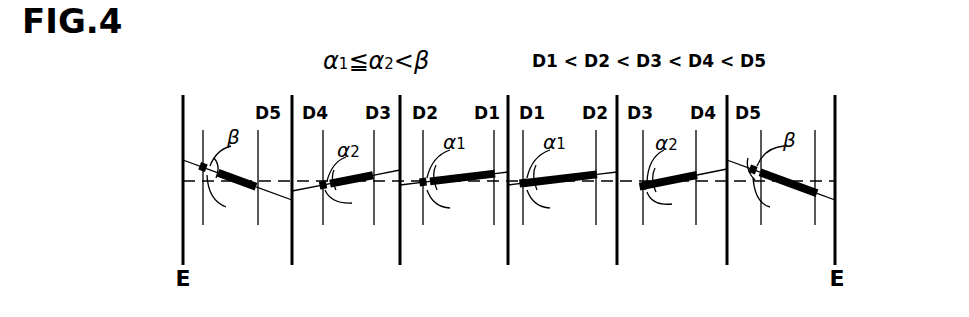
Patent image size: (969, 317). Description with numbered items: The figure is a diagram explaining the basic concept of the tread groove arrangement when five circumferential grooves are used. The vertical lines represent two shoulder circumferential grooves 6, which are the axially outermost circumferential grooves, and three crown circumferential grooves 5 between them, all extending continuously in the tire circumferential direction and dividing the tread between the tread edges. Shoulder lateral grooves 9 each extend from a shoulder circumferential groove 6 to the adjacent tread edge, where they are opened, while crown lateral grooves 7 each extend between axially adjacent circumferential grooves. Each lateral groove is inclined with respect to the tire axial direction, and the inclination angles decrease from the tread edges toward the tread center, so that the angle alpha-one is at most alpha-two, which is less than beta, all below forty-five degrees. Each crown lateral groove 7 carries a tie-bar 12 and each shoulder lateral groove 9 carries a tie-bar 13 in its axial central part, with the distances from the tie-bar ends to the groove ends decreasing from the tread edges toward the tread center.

The crown circumferential groove 5 is at (508, 193).
The shoulder circumferential groove 6 is at (509, 193).
The crown lateral groove 7 is at (509, 215).
The shoulder lateral groove 9 is at (545, 213).
The tie-bar 12 is at (513, 213).
The tie-bar 13 is at (500, 212).